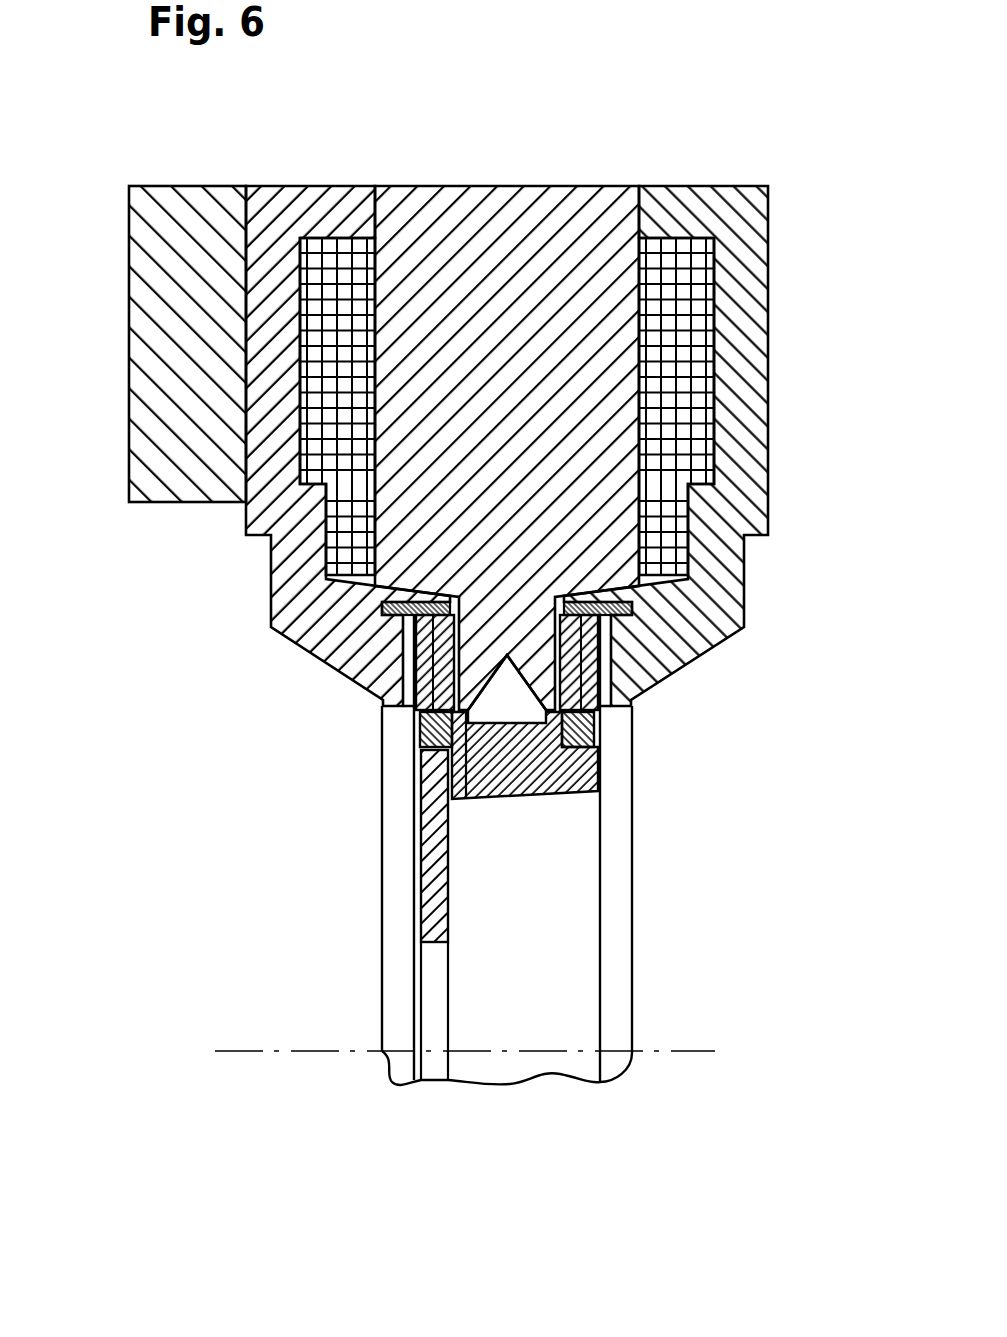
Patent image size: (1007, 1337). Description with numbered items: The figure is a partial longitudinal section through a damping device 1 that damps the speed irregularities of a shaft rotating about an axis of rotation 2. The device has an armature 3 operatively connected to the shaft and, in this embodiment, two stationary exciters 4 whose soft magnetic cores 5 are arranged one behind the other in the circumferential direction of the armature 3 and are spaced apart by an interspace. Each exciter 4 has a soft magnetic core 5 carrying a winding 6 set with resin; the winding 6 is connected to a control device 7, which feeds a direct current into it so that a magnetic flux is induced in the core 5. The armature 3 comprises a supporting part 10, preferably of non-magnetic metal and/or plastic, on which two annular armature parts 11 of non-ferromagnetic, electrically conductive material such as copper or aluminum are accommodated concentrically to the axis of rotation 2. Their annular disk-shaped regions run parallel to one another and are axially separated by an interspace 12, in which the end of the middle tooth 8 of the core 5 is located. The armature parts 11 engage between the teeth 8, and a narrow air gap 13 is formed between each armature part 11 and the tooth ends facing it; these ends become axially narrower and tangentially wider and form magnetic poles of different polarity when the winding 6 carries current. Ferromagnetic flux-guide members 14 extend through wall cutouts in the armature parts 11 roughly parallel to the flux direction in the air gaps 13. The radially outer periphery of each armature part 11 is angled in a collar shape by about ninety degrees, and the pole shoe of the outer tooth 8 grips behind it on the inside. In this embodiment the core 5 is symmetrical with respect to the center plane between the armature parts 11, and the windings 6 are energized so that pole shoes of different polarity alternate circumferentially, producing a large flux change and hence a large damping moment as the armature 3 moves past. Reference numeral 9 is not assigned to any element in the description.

The damping device 1 is at (192, 1186).
The axis of rotation 2 is at (260, 1043).
The armature 3 is at (320, 851).
The exciter 4 is at (836, 647).
The soft magnetic core 5 is at (552, 222).
The winding 6 is at (323, 268).
The control device 7 is at (155, 333).
The teeth 8 is at (516, 285).
The yoke 9 is at (345, 205).
The supporting part 10 is at (522, 793).
The armature part 11 is at (322, 596).
The interspace 12 is at (525, 717).
The air gap 13 is at (420, 712).
The flux-guide member 14 is at (442, 672).